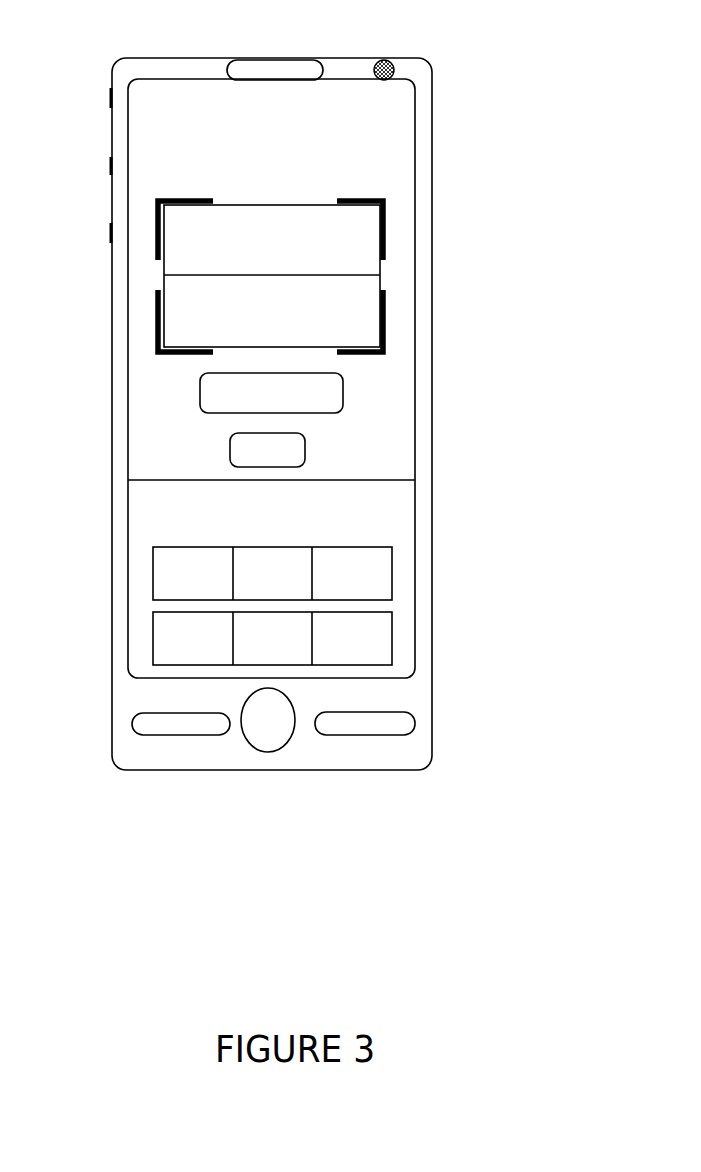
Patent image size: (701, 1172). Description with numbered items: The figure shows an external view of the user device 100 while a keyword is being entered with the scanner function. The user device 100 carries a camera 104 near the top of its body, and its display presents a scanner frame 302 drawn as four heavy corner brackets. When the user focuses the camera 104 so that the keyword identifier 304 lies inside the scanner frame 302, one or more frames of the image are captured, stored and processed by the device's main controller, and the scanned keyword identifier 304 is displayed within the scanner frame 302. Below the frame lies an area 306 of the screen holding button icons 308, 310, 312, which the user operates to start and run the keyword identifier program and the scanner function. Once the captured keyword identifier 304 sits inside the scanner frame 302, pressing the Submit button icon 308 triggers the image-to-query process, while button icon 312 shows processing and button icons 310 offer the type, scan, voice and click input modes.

The user device 100 is at (112, 305).
The camera 104 is at (384, 60).
The scanner frame 302 is at (368, 222).
The keyword identifier 304 is at (197, 237).
The area 306 is at (389, 388).
The Submit button icon 308 is at (282, 458).
The button icon 310 is at (400, 577).
The button icon 312 is at (200, 392).